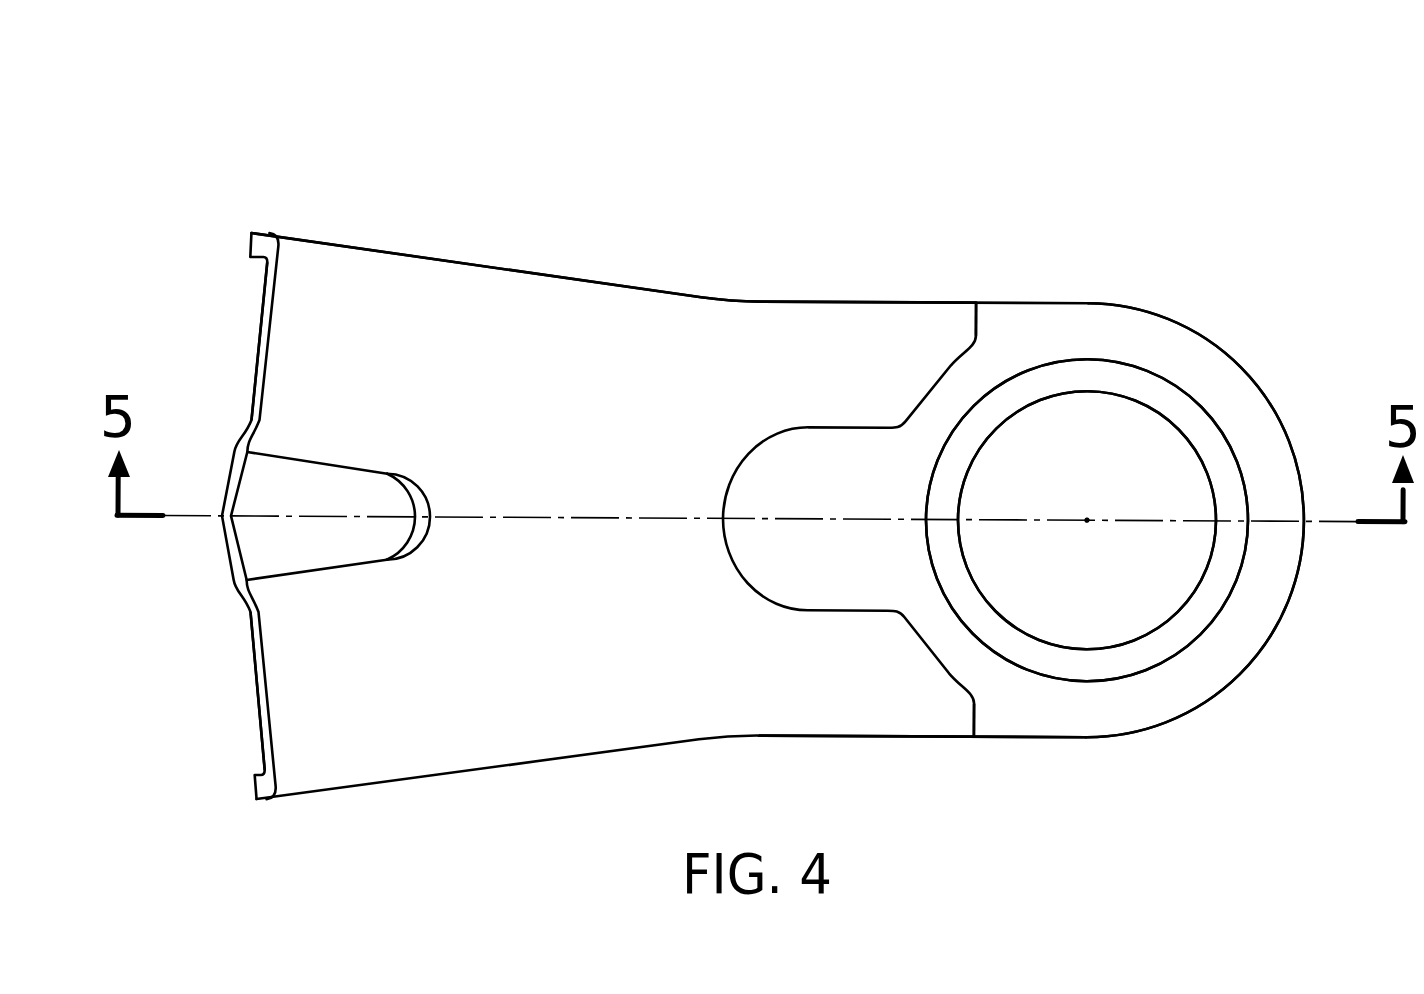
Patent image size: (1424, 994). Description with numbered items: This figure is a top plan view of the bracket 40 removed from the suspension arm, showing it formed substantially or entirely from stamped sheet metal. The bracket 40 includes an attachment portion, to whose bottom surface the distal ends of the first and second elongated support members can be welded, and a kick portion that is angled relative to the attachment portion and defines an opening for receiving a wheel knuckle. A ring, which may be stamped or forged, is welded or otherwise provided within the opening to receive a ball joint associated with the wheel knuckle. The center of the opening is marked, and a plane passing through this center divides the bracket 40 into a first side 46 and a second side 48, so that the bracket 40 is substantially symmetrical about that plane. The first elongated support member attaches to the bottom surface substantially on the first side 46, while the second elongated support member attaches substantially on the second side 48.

The bracket 40 is at (323, 160).
The first side 46 is at (999, 190).
The second side 48 is at (977, 781).